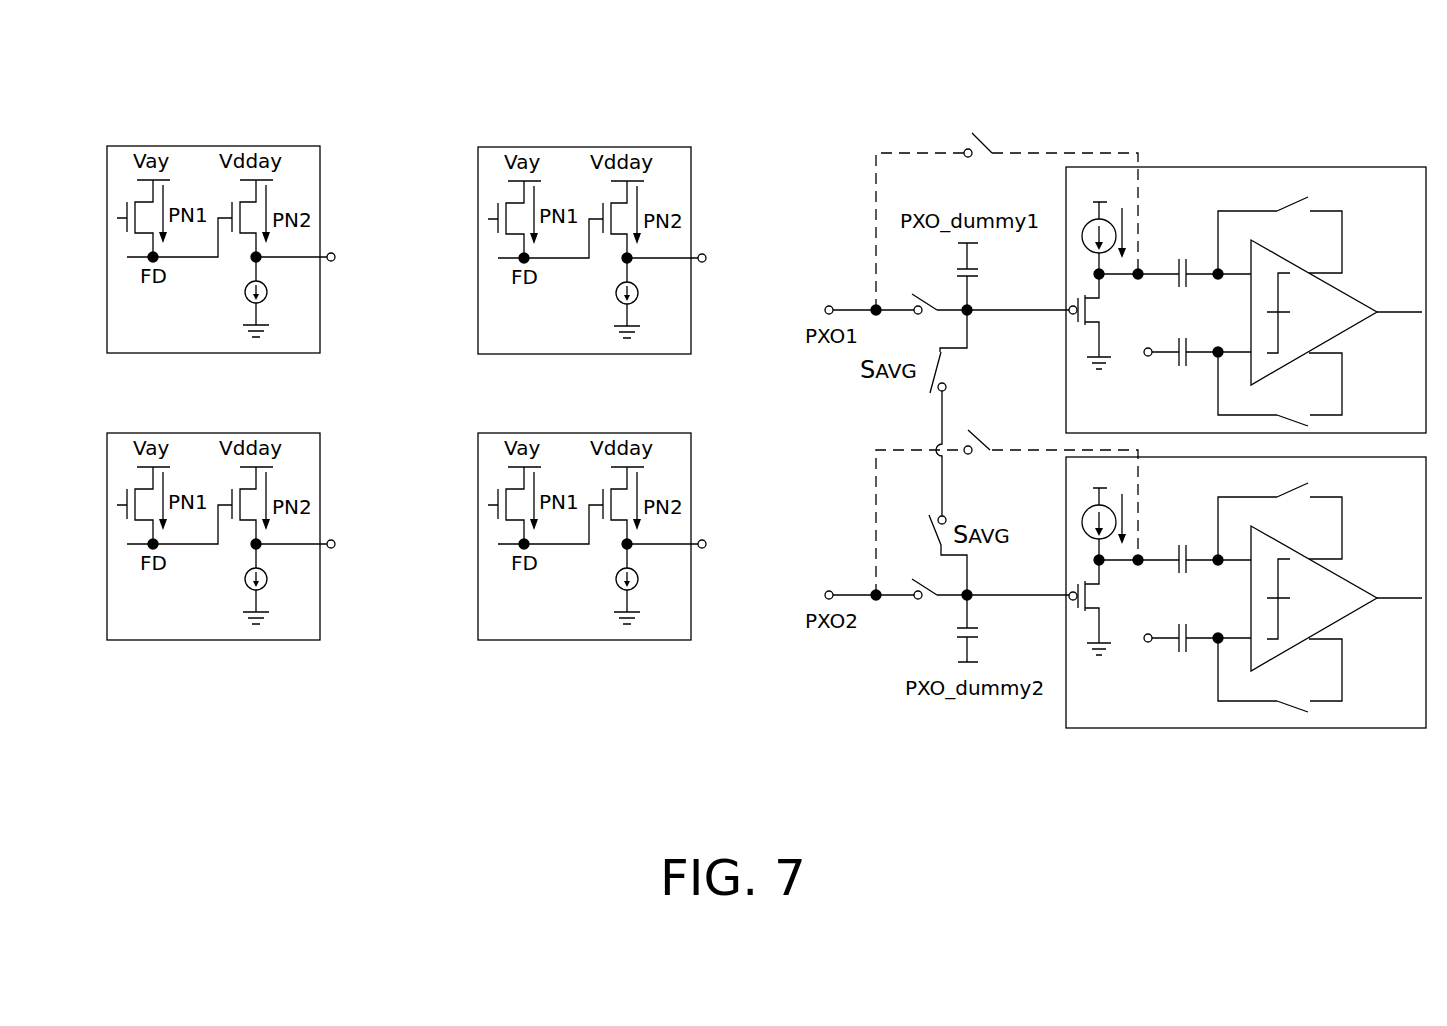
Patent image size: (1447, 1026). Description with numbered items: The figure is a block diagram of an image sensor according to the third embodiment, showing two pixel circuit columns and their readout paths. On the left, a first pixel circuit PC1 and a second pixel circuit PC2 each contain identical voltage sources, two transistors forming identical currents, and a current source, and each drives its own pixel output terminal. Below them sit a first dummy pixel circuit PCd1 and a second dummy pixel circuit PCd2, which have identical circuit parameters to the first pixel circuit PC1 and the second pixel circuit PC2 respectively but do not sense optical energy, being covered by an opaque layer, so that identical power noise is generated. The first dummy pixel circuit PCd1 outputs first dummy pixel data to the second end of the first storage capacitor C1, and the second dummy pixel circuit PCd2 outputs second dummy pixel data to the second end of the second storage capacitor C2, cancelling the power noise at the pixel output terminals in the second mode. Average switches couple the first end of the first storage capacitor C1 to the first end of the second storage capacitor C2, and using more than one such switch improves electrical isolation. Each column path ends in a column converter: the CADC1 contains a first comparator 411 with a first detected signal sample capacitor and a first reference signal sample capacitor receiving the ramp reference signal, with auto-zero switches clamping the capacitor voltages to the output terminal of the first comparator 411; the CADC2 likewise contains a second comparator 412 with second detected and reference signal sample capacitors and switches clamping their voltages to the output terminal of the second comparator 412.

The first comparator 411 is at (1340, 291).
The second comparator 412 is at (1345, 580).
The first pixel circuit PC1 is at (210, 146).
The second pixel circuit PC2 is at (635, 147).
The first dummy pixel circuit PCd1 is at (200, 640).
The second dummy pixel circuit PCd2 is at (588, 640).
The column analog-to-digital converter 1 CADC1 is at (1257, 167).
The column analog-to-digital converter 2 CADC2 is at (1265, 728).
The first storage capacitor C1 is at (985, 276).
The second storage capacitor C2 is at (987, 628).